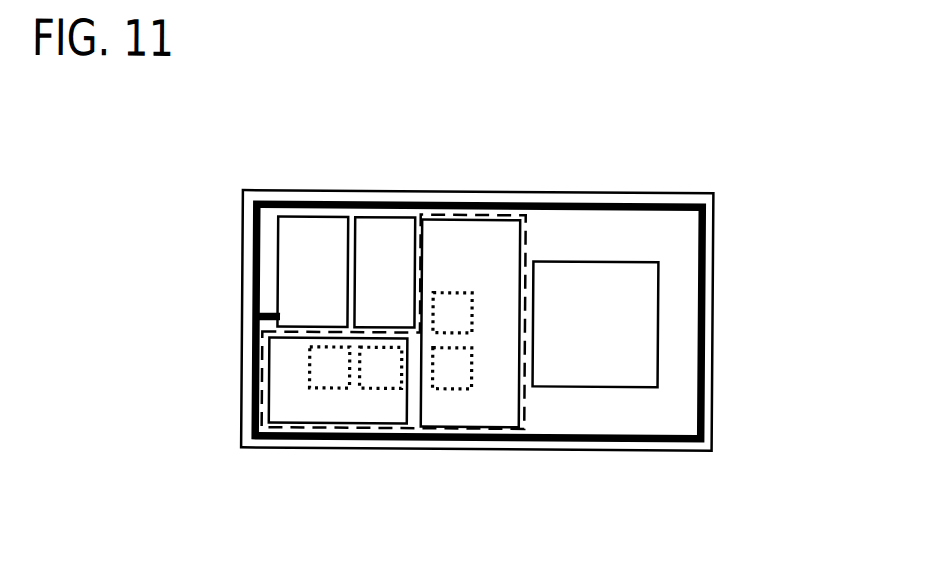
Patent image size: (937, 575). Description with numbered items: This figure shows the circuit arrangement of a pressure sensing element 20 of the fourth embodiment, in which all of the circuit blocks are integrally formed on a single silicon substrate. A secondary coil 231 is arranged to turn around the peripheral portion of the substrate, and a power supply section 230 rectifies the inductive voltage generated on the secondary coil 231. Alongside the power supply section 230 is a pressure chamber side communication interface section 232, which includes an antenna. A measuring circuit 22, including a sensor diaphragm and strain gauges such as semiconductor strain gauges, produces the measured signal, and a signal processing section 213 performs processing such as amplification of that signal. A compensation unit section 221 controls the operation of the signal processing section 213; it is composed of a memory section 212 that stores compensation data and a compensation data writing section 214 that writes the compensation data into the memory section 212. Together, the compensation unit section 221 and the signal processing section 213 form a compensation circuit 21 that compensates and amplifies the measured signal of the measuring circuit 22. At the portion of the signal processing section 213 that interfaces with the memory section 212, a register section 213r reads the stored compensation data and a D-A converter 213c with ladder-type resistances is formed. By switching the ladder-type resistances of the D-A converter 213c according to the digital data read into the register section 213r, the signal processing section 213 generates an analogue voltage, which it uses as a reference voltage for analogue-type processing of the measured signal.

The pressure sensing element 20 is at (744, 186).
The compensation circuit 21 is at (462, 215).
The measuring circuit 22 is at (628, 261).
The memory section 212 is at (380, 376).
The signal processing section 213 is at (476, 403).
The D-A converter 213c is at (472, 293).
The register section 213r is at (472, 365).
The compensation data writing section 214 is at (310, 364).
The compensation unit section 221 is at (338, 399).
The power supply section 230 is at (300, 263).
The secondary coil 231 is at (707, 323).
The pressure chamber side communication interface section 232 is at (387, 237).